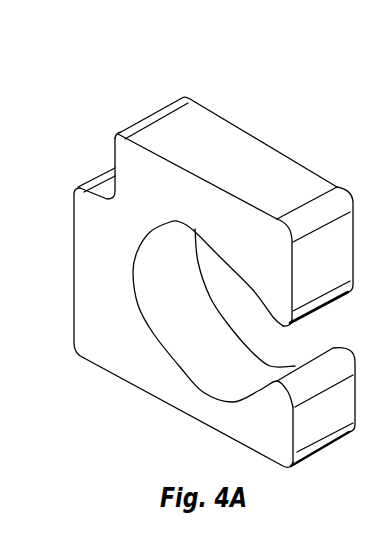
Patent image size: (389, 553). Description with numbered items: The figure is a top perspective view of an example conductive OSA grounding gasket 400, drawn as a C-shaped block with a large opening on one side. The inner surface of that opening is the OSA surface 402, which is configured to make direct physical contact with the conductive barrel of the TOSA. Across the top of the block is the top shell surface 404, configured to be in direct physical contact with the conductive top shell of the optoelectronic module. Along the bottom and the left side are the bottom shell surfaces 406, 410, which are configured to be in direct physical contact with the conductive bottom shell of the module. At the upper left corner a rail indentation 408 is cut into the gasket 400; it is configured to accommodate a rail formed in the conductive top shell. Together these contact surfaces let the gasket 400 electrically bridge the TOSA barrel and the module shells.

The gasket 400 is at (139, 68).
The OSA surface 402 is at (242, 368).
The top shell surface 404 is at (232, 148).
The bottom shell surface 406 is at (160, 400).
The rail indentation 408 is at (98, 177).
The bottom shell surface 410 is at (73, 273).